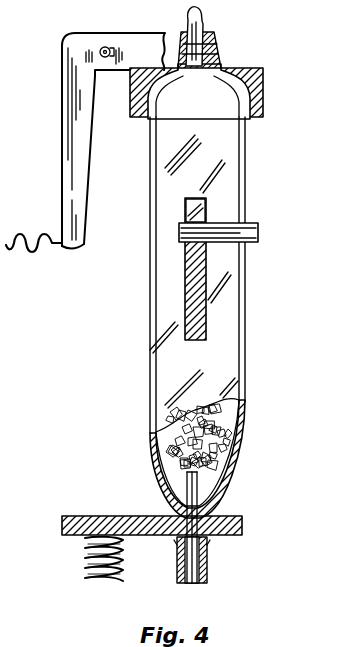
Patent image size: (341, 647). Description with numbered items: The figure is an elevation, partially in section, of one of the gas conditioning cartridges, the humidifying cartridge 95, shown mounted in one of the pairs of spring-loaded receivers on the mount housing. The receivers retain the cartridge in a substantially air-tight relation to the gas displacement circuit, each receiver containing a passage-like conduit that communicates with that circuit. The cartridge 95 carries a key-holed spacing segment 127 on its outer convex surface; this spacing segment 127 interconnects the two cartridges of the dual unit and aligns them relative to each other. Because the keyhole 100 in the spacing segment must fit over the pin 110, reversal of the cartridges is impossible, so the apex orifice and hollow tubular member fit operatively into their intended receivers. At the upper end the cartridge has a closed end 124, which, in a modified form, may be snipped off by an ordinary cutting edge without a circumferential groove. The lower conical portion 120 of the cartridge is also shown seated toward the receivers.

The humidifying cartridge 95 is at (245, 157).
The keyhole 100 is at (207, 216).
The pin 110 is at (256, 244).
The funnel bottom 120 is at (228, 470).
The closed end 124 is at (223, 66).
The key-holed spacing segment 127 is at (207, 332).